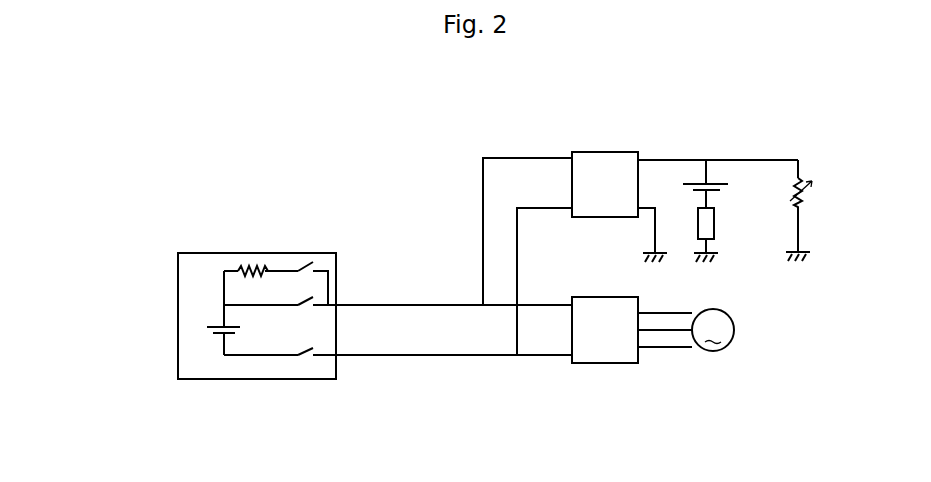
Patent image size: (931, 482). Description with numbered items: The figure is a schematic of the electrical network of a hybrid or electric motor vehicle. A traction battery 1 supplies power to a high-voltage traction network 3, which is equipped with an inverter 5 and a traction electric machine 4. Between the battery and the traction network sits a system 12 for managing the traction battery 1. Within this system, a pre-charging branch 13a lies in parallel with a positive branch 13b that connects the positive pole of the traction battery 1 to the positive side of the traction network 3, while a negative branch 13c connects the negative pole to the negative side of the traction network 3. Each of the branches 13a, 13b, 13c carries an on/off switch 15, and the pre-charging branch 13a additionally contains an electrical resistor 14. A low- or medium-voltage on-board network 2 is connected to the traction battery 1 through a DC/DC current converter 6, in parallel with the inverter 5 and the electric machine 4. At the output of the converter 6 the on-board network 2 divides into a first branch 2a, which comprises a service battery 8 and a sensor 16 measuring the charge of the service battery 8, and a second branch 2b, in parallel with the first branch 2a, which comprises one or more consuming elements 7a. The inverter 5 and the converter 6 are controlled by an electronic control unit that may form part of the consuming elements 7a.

The traction battery 1 is at (215, 336).
The on-board network 2 is at (485, 156).
The first branch 2a is at (705, 160).
The second branch 2b is at (797, 165).
The high-voltage traction network 3 is at (455, 357).
The traction electric machine 4 is at (716, 352).
The inverter 5 is at (602, 364).
The DC/DC current converter 6 is at (600, 151).
The consuming elements 7a is at (805, 184).
The service battery 8 is at (714, 230).
The system for managing the traction battery 12 is at (336, 379).
The pre-charging branch 13a is at (282, 270).
The positive branch 13b is at (250, 304).
The negative branch 13c is at (272, 357).
The electrical resistor 14 is at (244, 268).
The on/off switch 15 is at (310, 298).
The sensor 16 is at (716, 196).